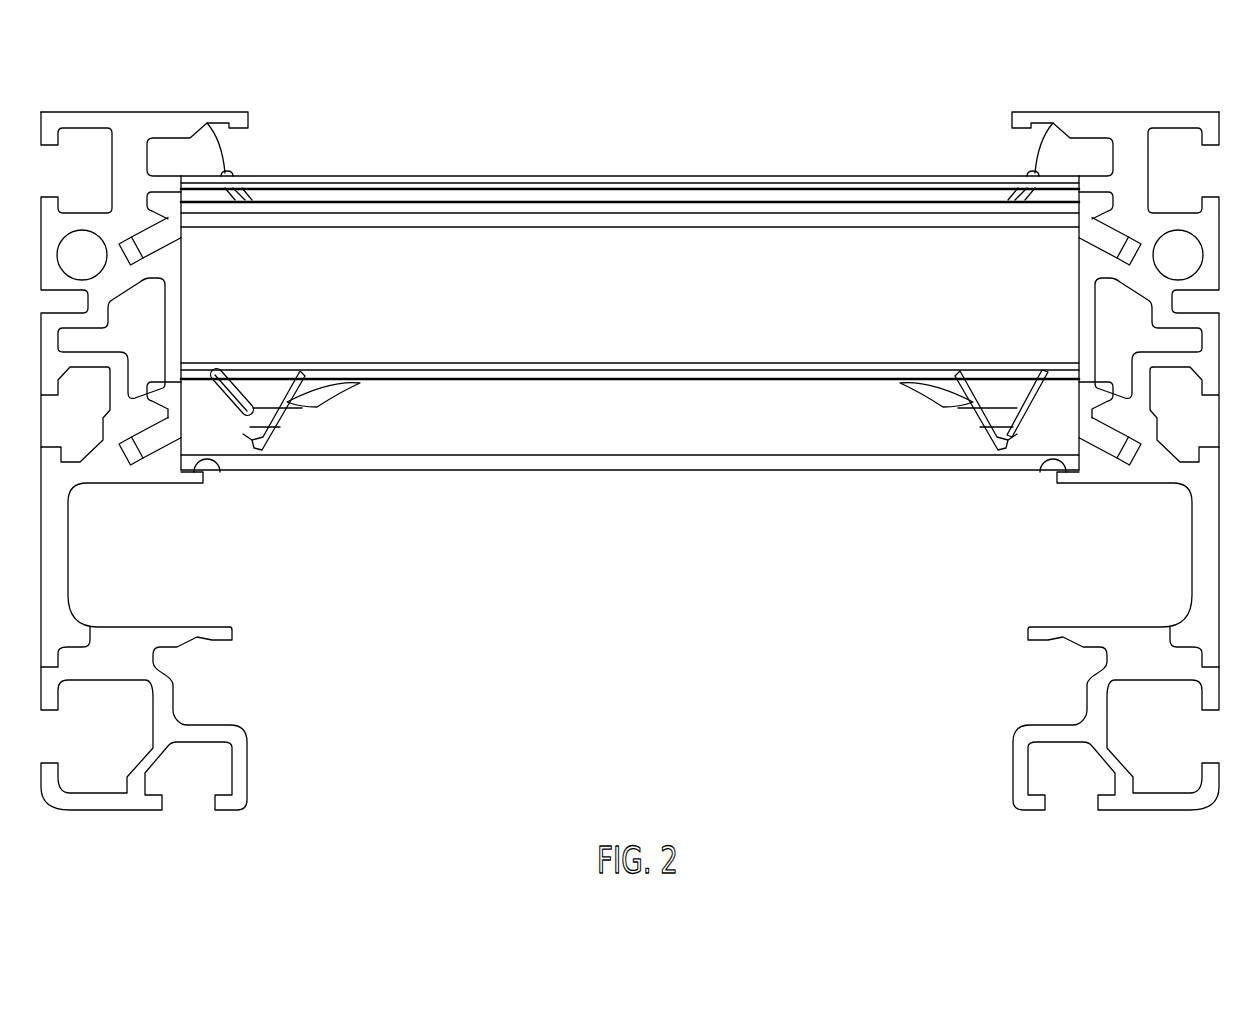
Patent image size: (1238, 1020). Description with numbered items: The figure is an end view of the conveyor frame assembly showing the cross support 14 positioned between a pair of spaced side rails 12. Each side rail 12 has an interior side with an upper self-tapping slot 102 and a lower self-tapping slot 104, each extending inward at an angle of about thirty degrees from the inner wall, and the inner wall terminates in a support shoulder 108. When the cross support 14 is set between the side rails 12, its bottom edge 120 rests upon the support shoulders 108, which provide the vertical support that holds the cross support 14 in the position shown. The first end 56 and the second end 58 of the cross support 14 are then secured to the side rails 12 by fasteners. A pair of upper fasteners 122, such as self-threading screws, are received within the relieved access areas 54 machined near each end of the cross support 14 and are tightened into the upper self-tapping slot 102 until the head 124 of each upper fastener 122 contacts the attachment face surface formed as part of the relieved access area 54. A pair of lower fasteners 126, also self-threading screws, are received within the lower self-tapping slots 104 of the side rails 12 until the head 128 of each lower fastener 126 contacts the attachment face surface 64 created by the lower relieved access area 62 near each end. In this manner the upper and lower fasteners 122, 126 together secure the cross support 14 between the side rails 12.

The side rail 12 is at (128, 112).
The cross support 14 is at (676, 176).
The relieved access area 54 is at (262, 197).
The first end 56 is at (182, 252).
The second end 58 is at (1079, 250).
The lower relieved access area 62 is at (299, 377).
The attachment face surface 64 is at (243, 434).
The upper self-tapping slot 102 is at (140, 237).
The lower self-tapping slot 104 is at (146, 462).
The support shoulder 108 is at (207, 462).
The bottom edge 120 is at (563, 470).
The upper fastener 122 is at (232, 175).
The head 124 is at (217, 174).
The lower fastener 126 is at (255, 385).
The head 128 is at (213, 371).